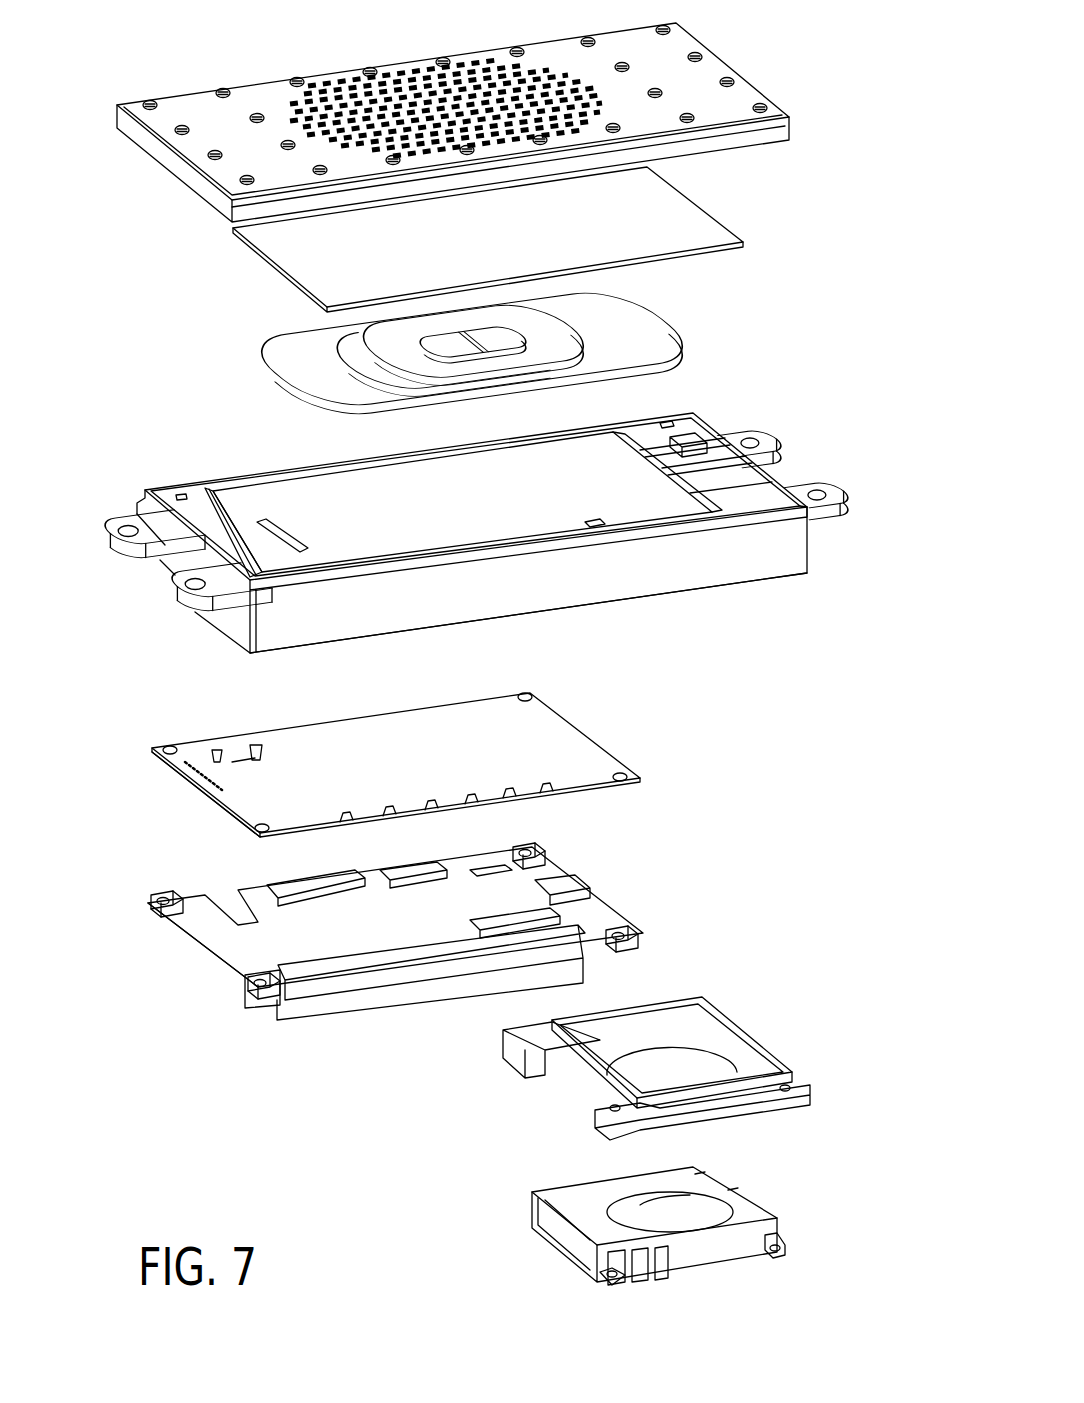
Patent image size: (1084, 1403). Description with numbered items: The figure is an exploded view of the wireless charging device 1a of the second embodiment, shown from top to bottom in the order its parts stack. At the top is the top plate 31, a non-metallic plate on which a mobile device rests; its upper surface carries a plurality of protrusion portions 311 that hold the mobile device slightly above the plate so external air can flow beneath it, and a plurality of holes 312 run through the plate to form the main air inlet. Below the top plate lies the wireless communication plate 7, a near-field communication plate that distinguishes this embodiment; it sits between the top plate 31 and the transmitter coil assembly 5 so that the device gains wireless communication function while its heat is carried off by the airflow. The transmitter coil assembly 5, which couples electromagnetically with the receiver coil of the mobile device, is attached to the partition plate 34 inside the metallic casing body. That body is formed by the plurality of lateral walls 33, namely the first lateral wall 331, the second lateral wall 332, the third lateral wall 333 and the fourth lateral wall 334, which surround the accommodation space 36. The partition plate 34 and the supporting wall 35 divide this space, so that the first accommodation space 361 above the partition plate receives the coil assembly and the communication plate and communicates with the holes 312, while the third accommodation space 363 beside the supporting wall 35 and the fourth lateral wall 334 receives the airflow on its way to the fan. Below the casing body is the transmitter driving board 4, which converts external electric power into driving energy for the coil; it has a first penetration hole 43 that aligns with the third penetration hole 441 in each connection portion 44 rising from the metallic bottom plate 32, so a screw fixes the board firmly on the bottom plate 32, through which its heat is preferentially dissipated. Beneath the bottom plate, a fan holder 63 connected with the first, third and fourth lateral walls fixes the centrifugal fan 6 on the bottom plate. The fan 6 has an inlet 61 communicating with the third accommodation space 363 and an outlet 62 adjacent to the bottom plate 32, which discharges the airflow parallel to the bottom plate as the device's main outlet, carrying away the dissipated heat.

The wireless charging device 1a is at (902, 58).
The top plate 31 is at (748, 98).
The protrusion portions 311 is at (703, 50).
The holes 312 is at (430, 72).
The wireless communication plate 7 is at (680, 223).
The transmitter coil assembly 5 is at (628, 321).
The lateral walls 33 is at (826, 563).
The partition plate 34 is at (300, 505).
The first accommodation space 361 is at (425, 495).
The supporting wall 35 is at (645, 448).
The first lateral wall 331 is at (690, 445).
The third accommodation space 363 is at (740, 470).
The fourth lateral wall 334 is at (790, 470).
The accommodation space 36 is at (805, 513).
The second lateral wall 332 is at (162, 572).
The third lateral wall 333 is at (674, 582).
The transmitter driving board 4 is at (580, 740).
The first penetration hole 43 is at (250, 826).
The bottom plate 32 is at (600, 915).
The third penetration hole 441 is at (260, 975).
The connection portions 44 is at (255, 985).
The fan holder 63 is at (760, 1050).
The fan 6 is at (740, 1252).
The inlet 61 is at (700, 1212).
The outlet 62 is at (578, 1242).